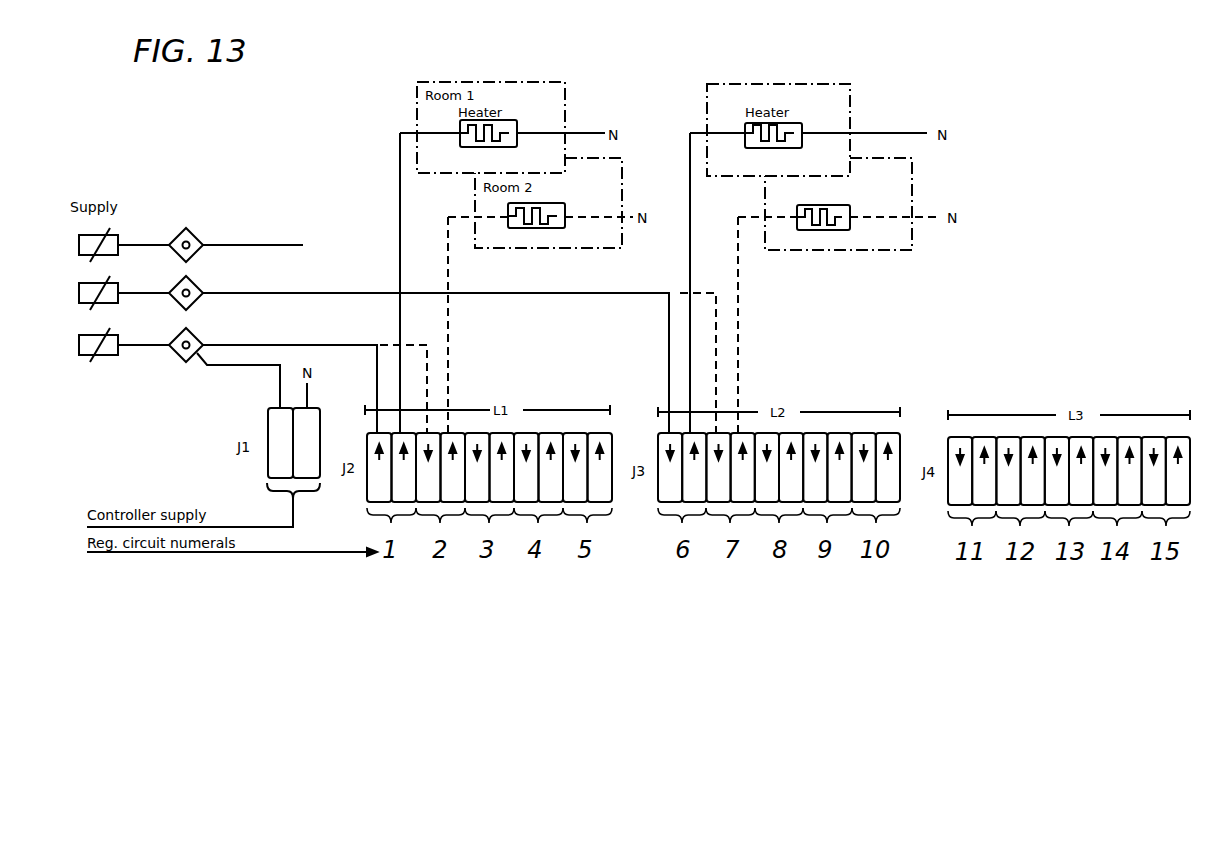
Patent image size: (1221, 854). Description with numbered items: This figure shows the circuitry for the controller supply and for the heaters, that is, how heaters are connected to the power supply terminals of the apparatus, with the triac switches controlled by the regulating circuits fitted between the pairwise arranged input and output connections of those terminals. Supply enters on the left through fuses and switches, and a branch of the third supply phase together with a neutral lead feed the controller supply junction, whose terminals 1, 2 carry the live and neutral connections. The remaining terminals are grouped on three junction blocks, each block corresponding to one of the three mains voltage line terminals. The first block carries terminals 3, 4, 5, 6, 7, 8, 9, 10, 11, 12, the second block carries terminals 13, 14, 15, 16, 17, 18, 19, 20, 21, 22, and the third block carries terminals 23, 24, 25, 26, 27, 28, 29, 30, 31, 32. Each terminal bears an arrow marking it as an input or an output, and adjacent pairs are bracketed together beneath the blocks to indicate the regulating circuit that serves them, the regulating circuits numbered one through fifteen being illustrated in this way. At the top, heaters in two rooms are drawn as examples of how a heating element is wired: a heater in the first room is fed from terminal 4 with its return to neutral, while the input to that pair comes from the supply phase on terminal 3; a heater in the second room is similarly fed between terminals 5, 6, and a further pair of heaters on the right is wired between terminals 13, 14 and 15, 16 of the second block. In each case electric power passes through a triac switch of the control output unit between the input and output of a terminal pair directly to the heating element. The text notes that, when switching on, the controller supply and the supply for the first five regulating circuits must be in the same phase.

The J1 terminal 1 (L1) 1 is at (280, 443).
The J1 terminal 2 (N) 2 is at (306, 443).
The J2 terminal 3 is at (379, 467).
The J2 terminal 4 is at (404, 467).
The J2 terminal 5 is at (428, 467).
The J2 terminal 6 is at (453, 467).
The J2 terminal 7 is at (477, 467).
The J2 terminal 8 is at (502, 467).
The control output unit 9 is at (526, 467).
The J2 terminal 10 is at (551, 467).
The J2 terminal 11 is at (575, 467).
The J2 terminal 12 is at (600, 467).
The J3 terminal 13 is at (670, 467).
The J3 terminal 14 is at (694, 467).
The J3 terminal 15 is at (718, 467).
The J3 terminal 16 is at (743, 467).
The J3 terminal 17 is at (767, 467).
The J3 terminal 18 is at (791, 467).
The J3 terminal 19 is at (815, 467).
The J3 terminal 20 is at (839, 467).
The J3 terminal 21 is at (864, 467).
The J3 terminal 22 is at (888, 467).
The J4 terminal 23 is at (960, 471).
The J4 terminal 24 is at (984, 471).
The J4 terminal 25 is at (1008, 471).
The J4 terminal 26 is at (1033, 471).
The J4 terminal 27 is at (1057, 471).
The J4 terminal 28 is at (1081, 471).
The J4 terminal 29 is at (1105, 471).
The J4 terminal 30 is at (1129, 471).
The J4 terminal 31 is at (1154, 471).
The J4 terminal 32 is at (1178, 471).